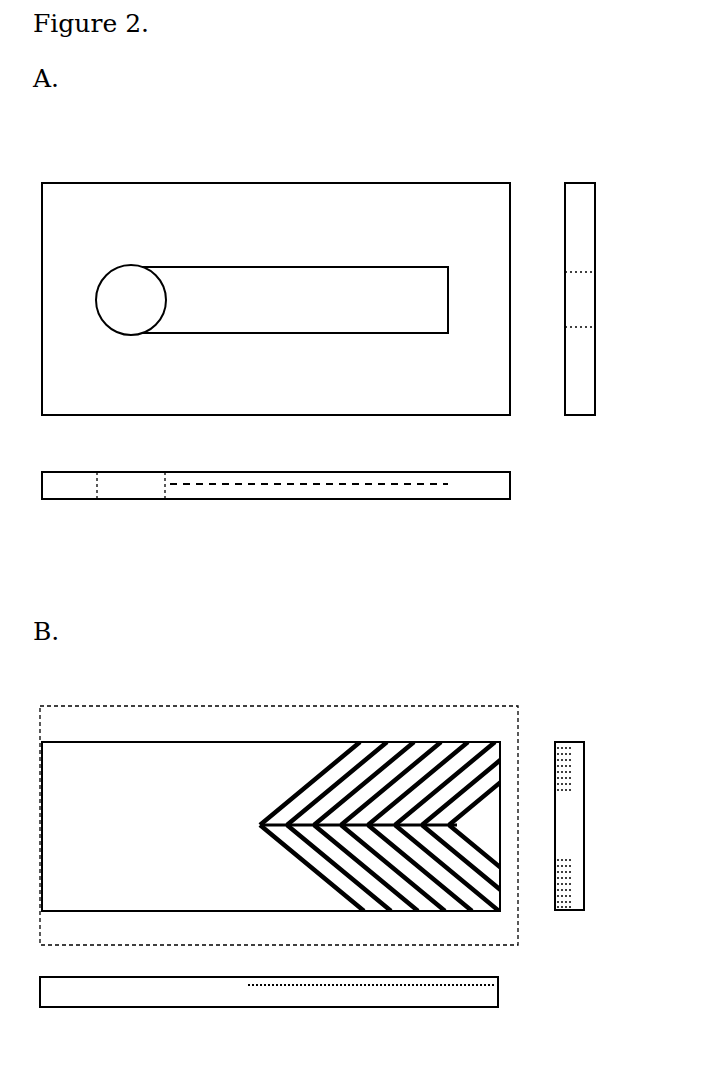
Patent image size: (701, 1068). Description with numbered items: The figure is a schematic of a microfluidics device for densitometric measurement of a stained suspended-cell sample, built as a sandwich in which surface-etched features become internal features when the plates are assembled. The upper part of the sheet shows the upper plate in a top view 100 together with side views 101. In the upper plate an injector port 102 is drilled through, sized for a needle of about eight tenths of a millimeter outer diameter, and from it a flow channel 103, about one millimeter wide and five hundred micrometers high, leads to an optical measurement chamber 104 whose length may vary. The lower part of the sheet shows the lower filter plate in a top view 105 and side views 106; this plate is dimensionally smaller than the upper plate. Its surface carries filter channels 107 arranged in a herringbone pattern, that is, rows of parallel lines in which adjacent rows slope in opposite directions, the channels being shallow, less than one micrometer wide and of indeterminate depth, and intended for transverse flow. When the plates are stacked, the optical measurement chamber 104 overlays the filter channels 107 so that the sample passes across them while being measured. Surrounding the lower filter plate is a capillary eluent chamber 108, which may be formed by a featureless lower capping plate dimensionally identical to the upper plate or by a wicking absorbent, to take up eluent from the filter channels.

The top view of the upper plate 100 is at (470, 224).
The side views of the upper plate 101 is at (578, 424).
The injector port 102 is at (128, 312).
The flow channel 103 is at (222, 308).
The optical measurement chamber 104 is at (367, 308).
The top view of the lower filter plate 105 is at (150, 822).
The side views of the lower filter plate 106 is at (508, 995).
The filter channels 107 is at (250, 832).
The capillary eluent chamber 108 is at (507, 930).